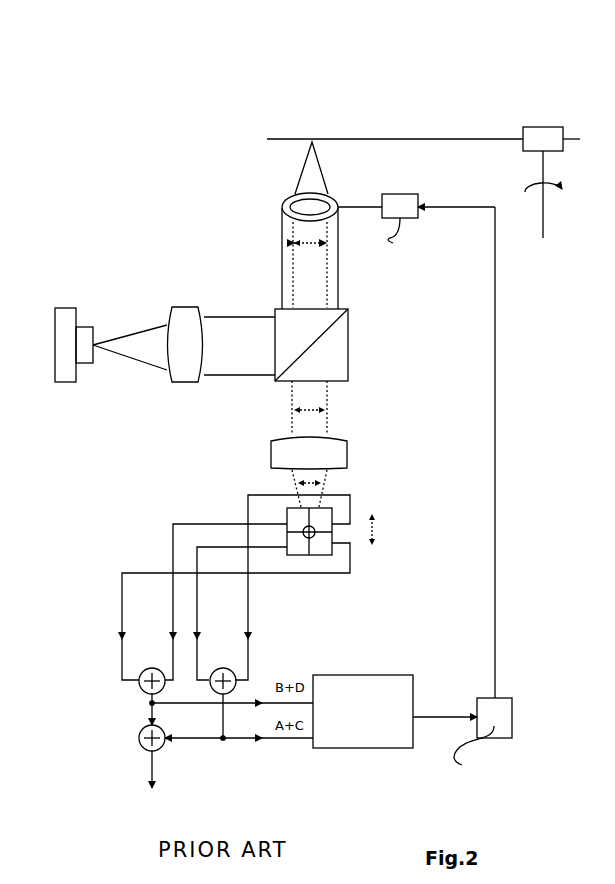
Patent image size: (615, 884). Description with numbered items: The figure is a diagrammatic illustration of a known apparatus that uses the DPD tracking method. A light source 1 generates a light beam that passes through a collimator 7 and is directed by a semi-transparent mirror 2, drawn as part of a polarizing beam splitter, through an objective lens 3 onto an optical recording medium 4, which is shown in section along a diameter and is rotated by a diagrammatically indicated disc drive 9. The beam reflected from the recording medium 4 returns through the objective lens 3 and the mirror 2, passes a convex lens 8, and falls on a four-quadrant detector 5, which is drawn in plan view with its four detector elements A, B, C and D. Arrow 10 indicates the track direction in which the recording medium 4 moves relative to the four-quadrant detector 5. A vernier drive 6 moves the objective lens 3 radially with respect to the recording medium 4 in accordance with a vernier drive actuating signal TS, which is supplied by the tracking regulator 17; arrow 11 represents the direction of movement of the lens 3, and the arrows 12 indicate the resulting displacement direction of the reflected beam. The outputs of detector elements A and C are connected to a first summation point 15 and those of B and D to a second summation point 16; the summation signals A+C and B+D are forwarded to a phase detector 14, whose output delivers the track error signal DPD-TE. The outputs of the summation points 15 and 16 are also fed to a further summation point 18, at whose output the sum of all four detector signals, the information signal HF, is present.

The light source 1 is at (65, 382).
The semi-transparent mirror 2 is at (342, 348).
The objective lens 3 is at (335, 195).
The optical recording medium 4 is at (470, 140).
The four-quadrant detector 5 is at (320, 556).
The vernier drive 6 is at (403, 193).
The collimator 7 is at (185, 377).
The convex lens 8 is at (338, 450).
The disc drive 9 is at (530, 198).
The arrow indicating track direction 10 is at (391, 533).
The arrow indicating lens movement direction 11 is at (318, 248).
The arrows indicating beam displacement direction 12 is at (325, 403).
The phase detector 14 is at (378, 680).
The first summation point 15 is at (152, 667).
The second summation point 16 is at (222, 667).
The tracking regulator 17 is at (500, 702).
The further summation point 18 is at (134, 733).